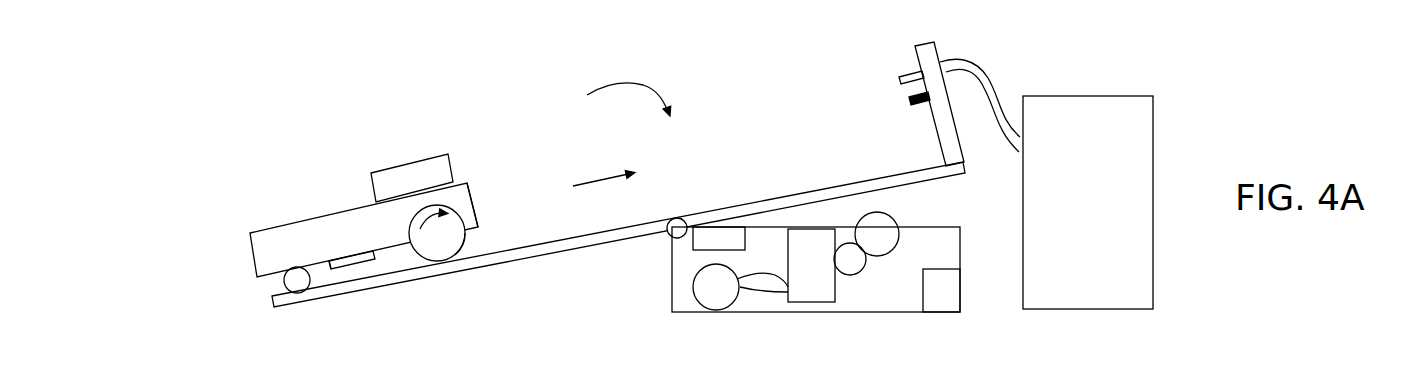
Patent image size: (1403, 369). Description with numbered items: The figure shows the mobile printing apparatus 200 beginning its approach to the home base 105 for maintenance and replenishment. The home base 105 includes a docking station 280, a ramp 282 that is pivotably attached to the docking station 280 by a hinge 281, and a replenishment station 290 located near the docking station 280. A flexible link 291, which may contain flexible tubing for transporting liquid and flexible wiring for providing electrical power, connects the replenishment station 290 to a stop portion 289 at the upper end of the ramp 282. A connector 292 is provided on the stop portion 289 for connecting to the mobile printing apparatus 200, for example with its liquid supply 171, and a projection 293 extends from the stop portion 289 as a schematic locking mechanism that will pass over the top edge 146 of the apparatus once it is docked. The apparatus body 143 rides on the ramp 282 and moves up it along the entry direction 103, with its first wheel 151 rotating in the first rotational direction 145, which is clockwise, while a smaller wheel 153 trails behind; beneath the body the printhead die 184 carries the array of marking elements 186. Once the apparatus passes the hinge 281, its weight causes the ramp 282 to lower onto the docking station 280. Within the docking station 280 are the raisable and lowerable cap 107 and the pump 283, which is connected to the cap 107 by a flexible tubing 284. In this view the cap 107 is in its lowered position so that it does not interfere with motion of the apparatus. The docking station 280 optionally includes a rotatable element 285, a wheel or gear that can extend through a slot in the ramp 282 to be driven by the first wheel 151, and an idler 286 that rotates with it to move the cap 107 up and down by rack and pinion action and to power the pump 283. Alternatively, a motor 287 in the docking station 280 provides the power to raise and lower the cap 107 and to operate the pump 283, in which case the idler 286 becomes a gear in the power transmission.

The mobile printing apparatus 200 is at (299, 130).
The carriage body 143 is at (333, 213).
The top edge 146 is at (466, 182).
The liquid supply 171 is at (410, 160).
The first rotational direction 145 is at (413, 221).
The first wheel 151 is at (468, 240).
The guide roller 153 is at (285, 287).
The printhead die 184 is at (327, 268).
The array of marking elements 186 is at (352, 272).
The home base 105 is at (608, 99).
The entry direction 103 is at (603, 177).
The ramp 282 is at (807, 185).
The hinge 281 is at (667, 232).
The docking station 280 is at (672, 287).
The pump 283 is at (694, 292).
The flexible tubing 284 is at (767, 287).
The cap 107 is at (827, 300).
The idler 286 is at (855, 268).
The rotatable element 285 is at (888, 213).
The motor 287 is at (952, 287).
The stop portion 289 is at (923, 45).
The connector 292 is at (903, 76).
The projection 293 is at (910, 103).
The flexible link 291 is at (973, 63).
The replenishment station 290 is at (1062, 95).